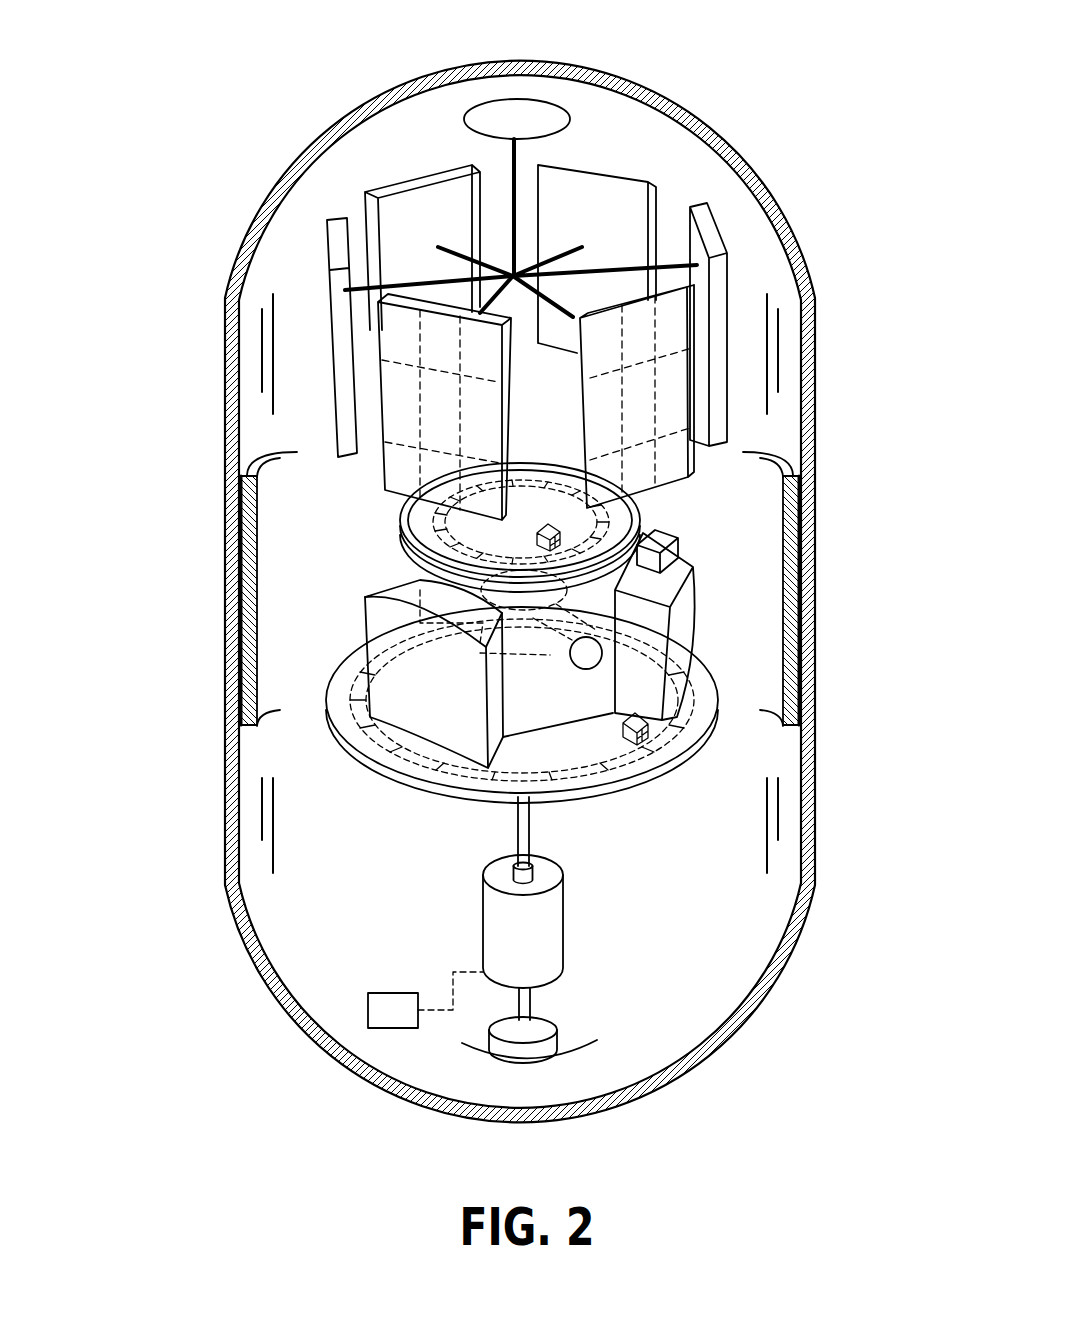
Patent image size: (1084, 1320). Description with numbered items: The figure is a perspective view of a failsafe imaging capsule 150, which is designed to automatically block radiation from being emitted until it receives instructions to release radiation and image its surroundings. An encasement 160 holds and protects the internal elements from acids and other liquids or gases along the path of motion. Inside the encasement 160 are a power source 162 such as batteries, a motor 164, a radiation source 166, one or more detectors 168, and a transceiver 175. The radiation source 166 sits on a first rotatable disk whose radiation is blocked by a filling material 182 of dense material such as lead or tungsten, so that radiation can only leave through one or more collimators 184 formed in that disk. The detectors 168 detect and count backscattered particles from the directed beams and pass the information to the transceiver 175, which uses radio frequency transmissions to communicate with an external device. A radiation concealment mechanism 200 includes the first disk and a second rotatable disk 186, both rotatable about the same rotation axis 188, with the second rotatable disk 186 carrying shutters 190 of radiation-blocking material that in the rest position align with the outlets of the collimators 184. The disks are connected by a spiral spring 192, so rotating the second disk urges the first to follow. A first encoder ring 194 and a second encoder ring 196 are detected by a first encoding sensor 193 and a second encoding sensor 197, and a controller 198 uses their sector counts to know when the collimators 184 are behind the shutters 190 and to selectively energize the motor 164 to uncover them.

The imaging capsule 150 is at (162, 176).
The encasement 160 is at (738, 148).
The power source 162 is at (560, 1036).
The motor 164 is at (483, 938).
The radiation source 166 is at (518, 632).
The detectors 168 is at (400, 397).
The transceiver 175 is at (538, 113).
The filling material 182 is at (517, 750).
The collimators 184 is at (587, 660).
The second rotatable disk 186 is at (373, 748).
The rotation axis 188 is at (548, 830).
The shutters 190 is at (417, 682).
The spring 192 is at (405, 518).
The first encoding sensor 193 is at (560, 536).
The first encoder ring 194 is at (407, 546).
The second encoder ring 196 is at (407, 750).
The second encoding sensor 197 is at (648, 736).
The controller 198 is at (368, 1003).
The radiation concealment mechanism 200 is at (302, 627).